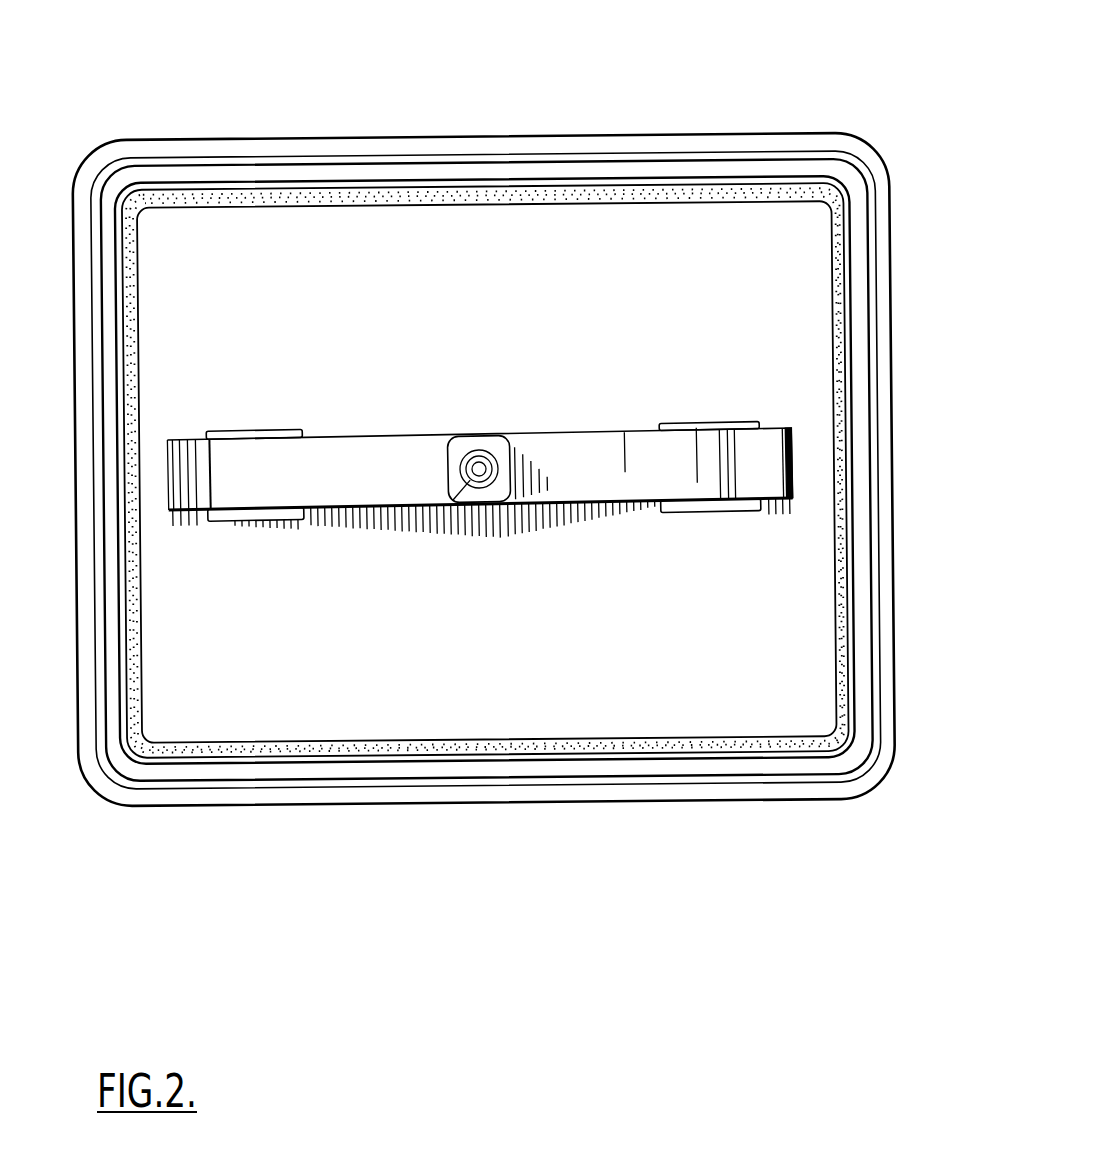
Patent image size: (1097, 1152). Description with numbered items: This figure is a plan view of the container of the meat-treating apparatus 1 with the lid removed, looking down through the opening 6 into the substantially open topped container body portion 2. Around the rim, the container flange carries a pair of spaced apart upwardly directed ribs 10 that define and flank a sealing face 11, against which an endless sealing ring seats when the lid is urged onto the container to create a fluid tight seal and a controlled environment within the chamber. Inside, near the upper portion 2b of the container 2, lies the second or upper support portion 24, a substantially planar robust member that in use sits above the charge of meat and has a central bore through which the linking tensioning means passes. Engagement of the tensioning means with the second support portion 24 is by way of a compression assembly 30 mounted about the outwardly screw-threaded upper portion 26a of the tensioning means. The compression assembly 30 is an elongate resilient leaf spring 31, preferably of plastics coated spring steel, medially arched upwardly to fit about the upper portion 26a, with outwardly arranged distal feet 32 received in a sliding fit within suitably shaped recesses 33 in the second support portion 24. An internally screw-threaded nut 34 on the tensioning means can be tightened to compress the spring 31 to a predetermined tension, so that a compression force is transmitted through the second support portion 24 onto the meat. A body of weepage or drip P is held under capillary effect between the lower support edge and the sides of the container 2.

The apparatus 1 is at (742, 105).
The container body portion 2 is at (252, 150).
The upper portion of the container 2b is at (757, 746).
The opening 6 is at (240, 708).
The ribs 10 is at (143, 187).
The sealing face 11 is at (192, 177).
The second support portion 24 is at (477, 683).
The upper portion of tensioning means 26a is at (463, 487).
The compression assembly 30 is at (475, 366).
The leaf spring 31 is at (590, 490).
The distal feet 32 is at (713, 442).
The recesses 33 is at (715, 507).
The nut 34 is at (490, 448).
The body of weepage or drip P is at (842, 698).